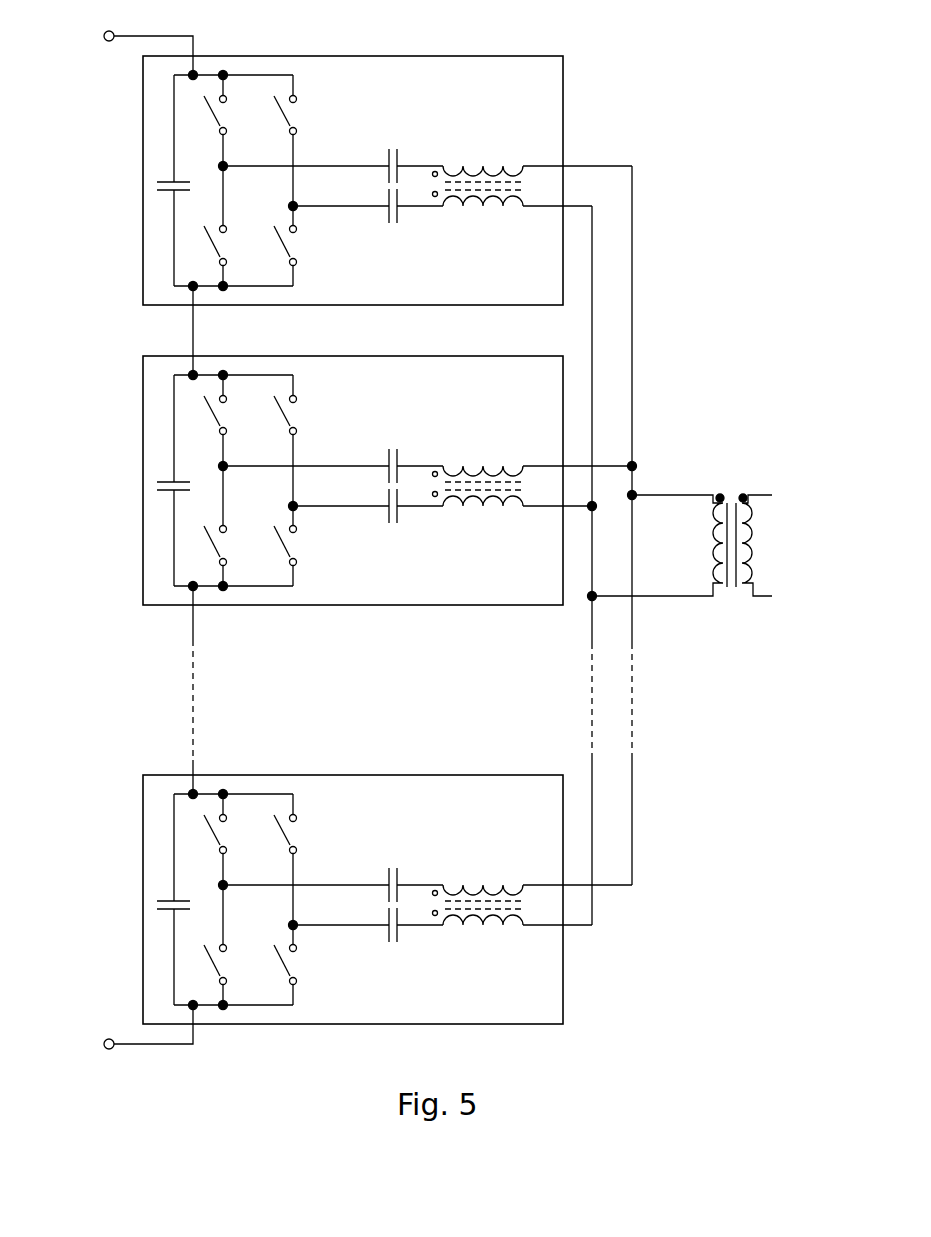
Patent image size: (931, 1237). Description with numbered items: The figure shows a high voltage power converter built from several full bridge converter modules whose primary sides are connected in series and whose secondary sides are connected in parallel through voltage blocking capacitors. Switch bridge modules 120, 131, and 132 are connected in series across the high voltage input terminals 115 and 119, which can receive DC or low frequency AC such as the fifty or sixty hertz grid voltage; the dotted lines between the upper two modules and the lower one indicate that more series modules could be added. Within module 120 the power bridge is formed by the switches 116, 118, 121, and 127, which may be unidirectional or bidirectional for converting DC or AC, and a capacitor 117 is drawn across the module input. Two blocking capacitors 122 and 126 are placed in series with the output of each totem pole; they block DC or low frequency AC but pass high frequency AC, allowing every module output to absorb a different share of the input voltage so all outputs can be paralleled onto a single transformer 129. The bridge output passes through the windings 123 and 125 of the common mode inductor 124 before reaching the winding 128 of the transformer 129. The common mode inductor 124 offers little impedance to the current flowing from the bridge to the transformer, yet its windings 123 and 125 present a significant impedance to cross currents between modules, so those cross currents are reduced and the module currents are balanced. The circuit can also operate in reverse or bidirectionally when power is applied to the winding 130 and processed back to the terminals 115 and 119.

The high voltage input terminal 115 is at (128, 42).
The switch 116 is at (204, 108).
The DC link capacitor 117 is at (160, 192).
The switch 118 is at (205, 244).
The high voltage input terminal 119 is at (128, 1036).
The switch bridge module 120 is at (353, 55).
The switch 121 is at (303, 117).
The blocking capacitor 122 is at (403, 157).
The winding of common mode inductor 123 is at (497, 162).
The common mode inductor 124 is at (532, 185).
The winding of common mode inductor 125 is at (493, 207).
The blocking capacitor 126 is at (403, 217).
The switch 127 is at (303, 258).
The winding of transformer 128 is at (710, 535).
The transformer 129 is at (731, 488).
The winding of transformer 130 is at (762, 535).
The switch bridge module 131 is at (442, 605).
The switch bridge module 132 is at (402, 773).